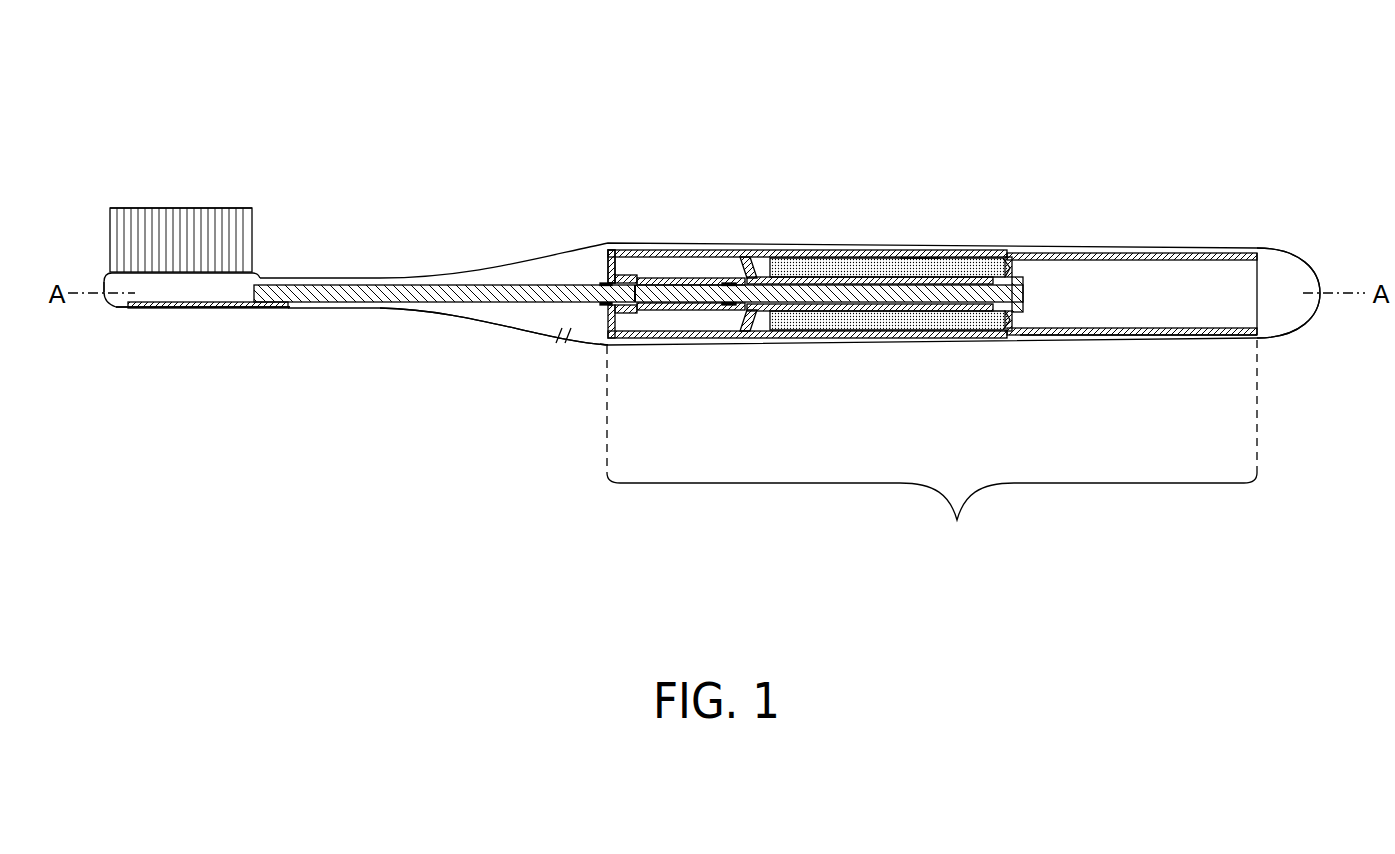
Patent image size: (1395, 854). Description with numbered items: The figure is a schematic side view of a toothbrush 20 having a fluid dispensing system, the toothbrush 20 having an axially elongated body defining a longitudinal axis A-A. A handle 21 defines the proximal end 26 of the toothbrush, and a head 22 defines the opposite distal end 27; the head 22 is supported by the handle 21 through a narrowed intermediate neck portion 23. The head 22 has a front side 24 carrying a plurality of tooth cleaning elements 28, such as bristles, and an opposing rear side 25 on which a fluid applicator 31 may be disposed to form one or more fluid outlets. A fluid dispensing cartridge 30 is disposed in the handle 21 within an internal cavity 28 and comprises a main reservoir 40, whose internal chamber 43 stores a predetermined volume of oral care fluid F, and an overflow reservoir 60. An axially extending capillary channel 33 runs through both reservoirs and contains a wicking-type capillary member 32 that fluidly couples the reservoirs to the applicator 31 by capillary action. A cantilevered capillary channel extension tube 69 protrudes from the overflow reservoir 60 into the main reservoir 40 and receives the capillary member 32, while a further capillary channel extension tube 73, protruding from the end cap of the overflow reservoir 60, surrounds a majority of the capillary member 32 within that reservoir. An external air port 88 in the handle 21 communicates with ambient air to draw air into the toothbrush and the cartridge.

The toothbrush 20 is at (1192, 163).
The handle 21 is at (595, 347).
The head 22 is at (228, 151).
The neck portion 23 is at (422, 312).
The front side 24 is at (209, 266).
The rear side 25 is at (170, 324).
The proximal end 26 is at (1286, 246).
The distal end 27 is at (84, 260).
The tooth cleaning elements 28 is at (140, 207).
The fluid dispensing cartridge 30 is at (932, 444).
The fluid applicator 31 is at (228, 310).
The capillary member 32 is at (392, 290).
The capillary channel 33 is at (996, 257).
The main reservoir 40 is at (1003, 250).
The internal chamber 43 is at (840, 262).
The overflow reservoir 60 is at (653, 250).
The capillary channel extension tube 69 is at (942, 294).
The capillary channel extension tube 73 is at (698, 282).
The external air port 88 is at (550, 347).
The oral care fluid F is at (922, 262).